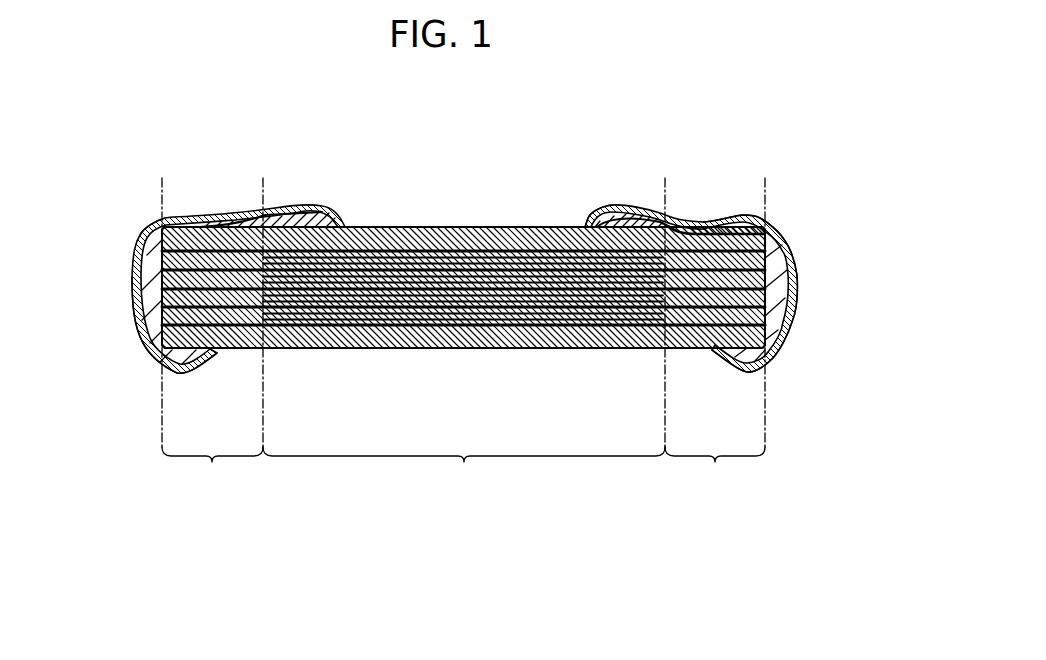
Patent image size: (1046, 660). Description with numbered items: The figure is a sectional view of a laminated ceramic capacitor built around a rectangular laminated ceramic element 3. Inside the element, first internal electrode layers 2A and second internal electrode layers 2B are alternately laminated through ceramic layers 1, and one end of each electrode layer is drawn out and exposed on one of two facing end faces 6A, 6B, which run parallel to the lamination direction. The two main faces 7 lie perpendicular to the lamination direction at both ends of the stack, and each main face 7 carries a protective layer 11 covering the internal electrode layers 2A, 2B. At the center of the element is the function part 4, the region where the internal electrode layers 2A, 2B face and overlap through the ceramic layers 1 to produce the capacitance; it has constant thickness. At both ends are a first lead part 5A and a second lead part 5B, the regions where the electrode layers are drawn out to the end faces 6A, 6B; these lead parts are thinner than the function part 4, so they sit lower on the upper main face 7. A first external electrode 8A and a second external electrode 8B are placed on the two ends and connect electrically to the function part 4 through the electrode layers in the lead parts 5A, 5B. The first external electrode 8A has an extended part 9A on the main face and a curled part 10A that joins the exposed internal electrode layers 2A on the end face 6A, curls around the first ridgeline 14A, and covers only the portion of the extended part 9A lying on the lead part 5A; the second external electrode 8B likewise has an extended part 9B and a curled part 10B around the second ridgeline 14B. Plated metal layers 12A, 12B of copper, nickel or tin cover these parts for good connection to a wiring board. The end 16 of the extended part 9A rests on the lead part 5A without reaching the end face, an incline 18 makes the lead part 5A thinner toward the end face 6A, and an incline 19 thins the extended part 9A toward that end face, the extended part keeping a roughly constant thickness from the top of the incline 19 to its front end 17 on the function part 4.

The ceramic layer 1 is at (205, 310).
The first internal electrode layer 2A is at (727, 266).
The second internal electrode layer 2B is at (206, 287).
The laminated ceramic element 3 is at (478, 348).
The function part 4 is at (464, 378).
The first lead part 5A is at (715, 337).
The second lead part 5B is at (212, 337).
The first end face 6A is at (763, 318).
The second end face 6B is at (155, 317).
The main face 7 is at (372, 227).
The first external electrode 8A is at (803, 287).
The second external electrode 8B is at (126, 283).
The first extended part 9A is at (628, 216).
The second extended part 9B is at (228, 215).
The first curled part 10A is at (773, 263).
The second curled part 10B is at (147, 256).
The protective layer 11 is at (437, 238).
The metal layer 12A is at (783, 348).
The metal layer 12B is at (150, 358).
The first ridgeline 14A is at (763, 233).
The second ridgeline 14B is at (162, 221).
The end of extended part 16 is at (757, 216).
The front end of extended part 17 is at (593, 219).
The incline of lead part 18 is at (690, 229).
The incline of extended part 19 is at (725, 221).